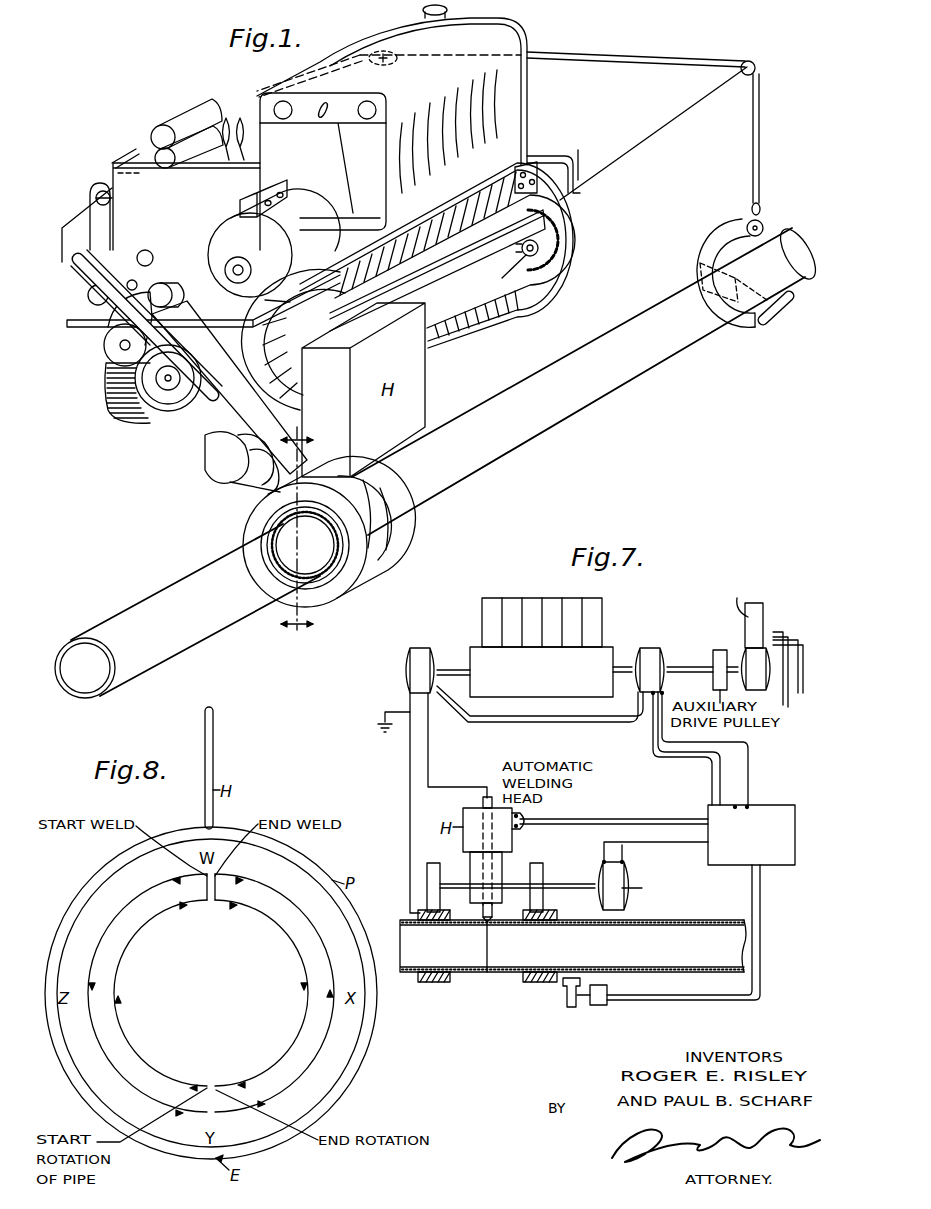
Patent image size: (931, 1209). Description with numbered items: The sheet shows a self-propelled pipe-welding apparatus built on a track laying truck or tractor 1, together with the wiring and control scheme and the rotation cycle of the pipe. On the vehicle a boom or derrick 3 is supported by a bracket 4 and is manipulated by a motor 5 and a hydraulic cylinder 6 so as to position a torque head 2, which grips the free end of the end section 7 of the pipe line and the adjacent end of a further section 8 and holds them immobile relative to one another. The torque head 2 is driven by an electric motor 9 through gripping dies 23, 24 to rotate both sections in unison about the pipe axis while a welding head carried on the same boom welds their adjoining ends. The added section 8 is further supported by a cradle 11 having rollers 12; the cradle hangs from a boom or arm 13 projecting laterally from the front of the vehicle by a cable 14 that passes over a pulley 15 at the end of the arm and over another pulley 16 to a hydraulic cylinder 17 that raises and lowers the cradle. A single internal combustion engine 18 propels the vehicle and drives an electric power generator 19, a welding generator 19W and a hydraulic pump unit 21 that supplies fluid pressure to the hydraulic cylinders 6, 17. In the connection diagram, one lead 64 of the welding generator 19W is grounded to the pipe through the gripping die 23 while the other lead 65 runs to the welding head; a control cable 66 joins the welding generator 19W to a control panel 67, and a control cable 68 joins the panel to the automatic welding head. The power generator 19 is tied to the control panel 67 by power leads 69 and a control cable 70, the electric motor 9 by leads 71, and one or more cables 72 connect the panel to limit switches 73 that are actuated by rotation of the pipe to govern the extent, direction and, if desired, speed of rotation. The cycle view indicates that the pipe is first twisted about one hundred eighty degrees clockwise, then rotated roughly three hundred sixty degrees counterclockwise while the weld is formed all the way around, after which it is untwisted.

In FIG. 1, the track laying truck or tractor 1 is at (483, 290).
In FIG. 1, the torque head 2 is at (392, 567).
In FIG. 1, the boom or derrick 3 is at (213, 403).
In FIG. 1, the bracket 4 is at (105, 347).
In FIG. 1, the motor 5 is at (172, 303).
In FIG. 1, the hydraulic cylinder 6 is at (150, 150).
In FIG. 1, the end section of the pipe line 7 is at (222, 625).
In FIG. 7, the end section of the pipe line 7 is at (412, 974).
In FIG. 1, the further pipe section 8 is at (585, 402).
In FIG. 7, the further pipe section 8 is at (718, 972).
In FIG. 1, the electric motor 9 is at (213, 453).
In FIG. 7, the electric motor 9 is at (596, 872).
In FIG. 1, the cradle 11 is at (735, 325).
In FIG. 1, the rollers 12 is at (790, 300).
In FIG. 1, the boom or arm 13 is at (654, 138).
In FIG. 1, the cable 14 is at (760, 150).
In FIG. 1, the pulley 15 is at (757, 68).
In FIG. 1, the pulley or pulleys 16 is at (388, 66).
In FIG. 1, the hydraulic cylinder 17 is at (178, 126).
In FIG. 1, the internal combustion engine 18 is at (487, 120).
In FIG. 7, the internal combustion engine 18 is at (531, 605).
In FIG. 1, the electric power generator 19 is at (222, 240).
In FIG. 7, the electric power generator 19 is at (661, 658).
In FIG. 7, the welding generator 19W is at (405, 668).
In FIG. 1, the hydraulic pump unit 21 is at (88, 294).
In FIG. 7, the hydraulic pump unit 21 is at (750, 657).
In FIG. 7, the gripping die 23 is at (438, 984).
In FIG. 7, the gripping die 24 is at (532, 984).
In FIG. 7, the lead 64 is at (412, 792).
In FIG. 7, the lead 65 is at (430, 757).
In FIG. 7, the control cable 66 is at (566, 722).
In FIG. 7, the control panel 67 is at (776, 860).
In FIG. 7, the control cable 68 is at (598, 819).
In FIG. 7, the power leads 69 is at (737, 768).
In FIG. 7, the control cable 70 is at (641, 705).
In FIG. 7, the leads 71 is at (671, 843).
In FIG. 7, the cables 72 is at (760, 948).
In FIG. 7, the limit switches 73 is at (606, 992).